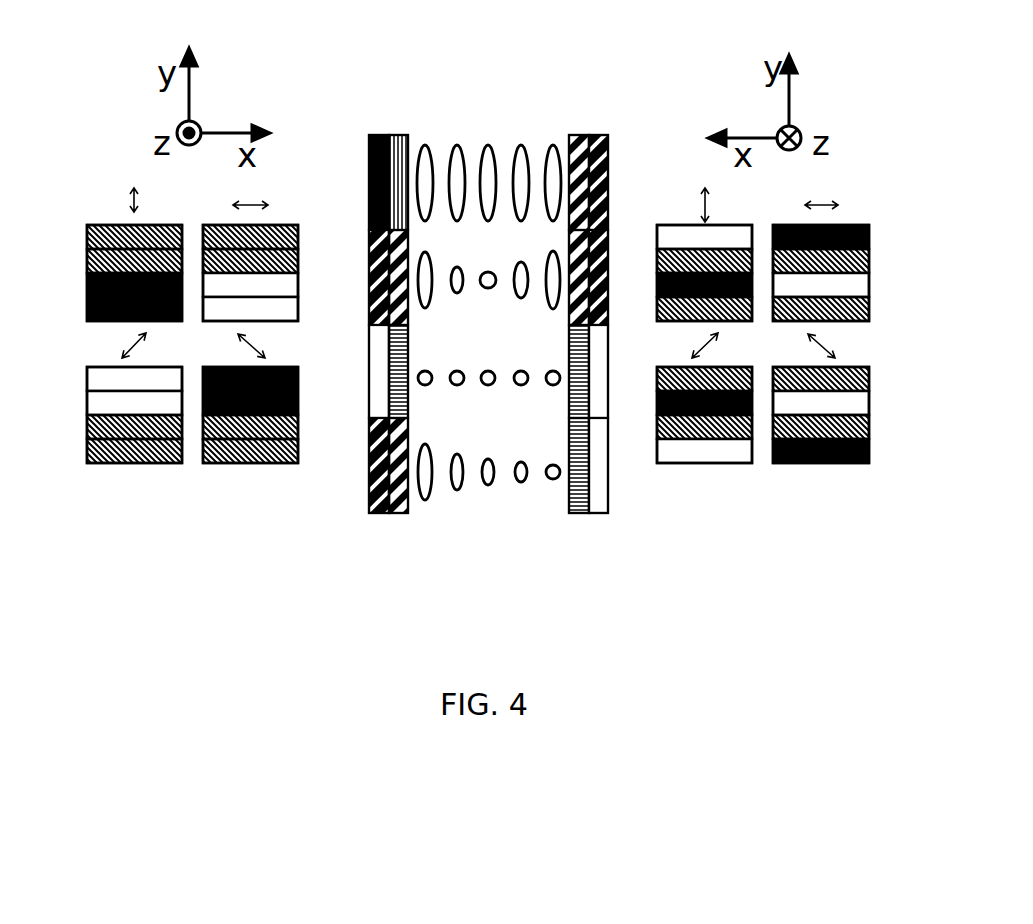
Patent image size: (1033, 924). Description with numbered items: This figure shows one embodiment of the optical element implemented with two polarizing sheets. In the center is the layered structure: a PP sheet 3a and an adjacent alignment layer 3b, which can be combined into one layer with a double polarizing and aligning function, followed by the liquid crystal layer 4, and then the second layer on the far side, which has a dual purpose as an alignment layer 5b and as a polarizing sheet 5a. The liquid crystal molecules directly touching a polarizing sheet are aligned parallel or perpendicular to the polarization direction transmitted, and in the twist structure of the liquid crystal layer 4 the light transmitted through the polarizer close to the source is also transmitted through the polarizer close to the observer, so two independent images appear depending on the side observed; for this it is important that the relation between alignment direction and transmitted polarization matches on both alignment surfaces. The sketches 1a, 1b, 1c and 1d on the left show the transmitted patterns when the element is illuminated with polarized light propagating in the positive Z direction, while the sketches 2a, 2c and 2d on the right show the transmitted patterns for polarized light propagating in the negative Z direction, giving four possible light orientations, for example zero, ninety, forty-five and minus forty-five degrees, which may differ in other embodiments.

The transmitted pattern sketch 1a is at (114, 273).
The transmitted pattern sketch 1b is at (566, 273).
The transmitted pattern sketch 1c is at (114, 415).
The transmitted pattern sketch 1d is at (281, 415).
The transmitted pattern sketch 2a is at (683, 273).
The transmitted pattern sketch 2c is at (683, 415).
The transmitted pattern sketch 2d is at (848, 415).
The PP sheet 3a is at (371, 519).
The alignment layer 3b is at (398, 519).
The liquid crystal layer 4 is at (510, 531).
The polarizing sheet 5a is at (617, 532).
The alignment layer 5b is at (583, 532).